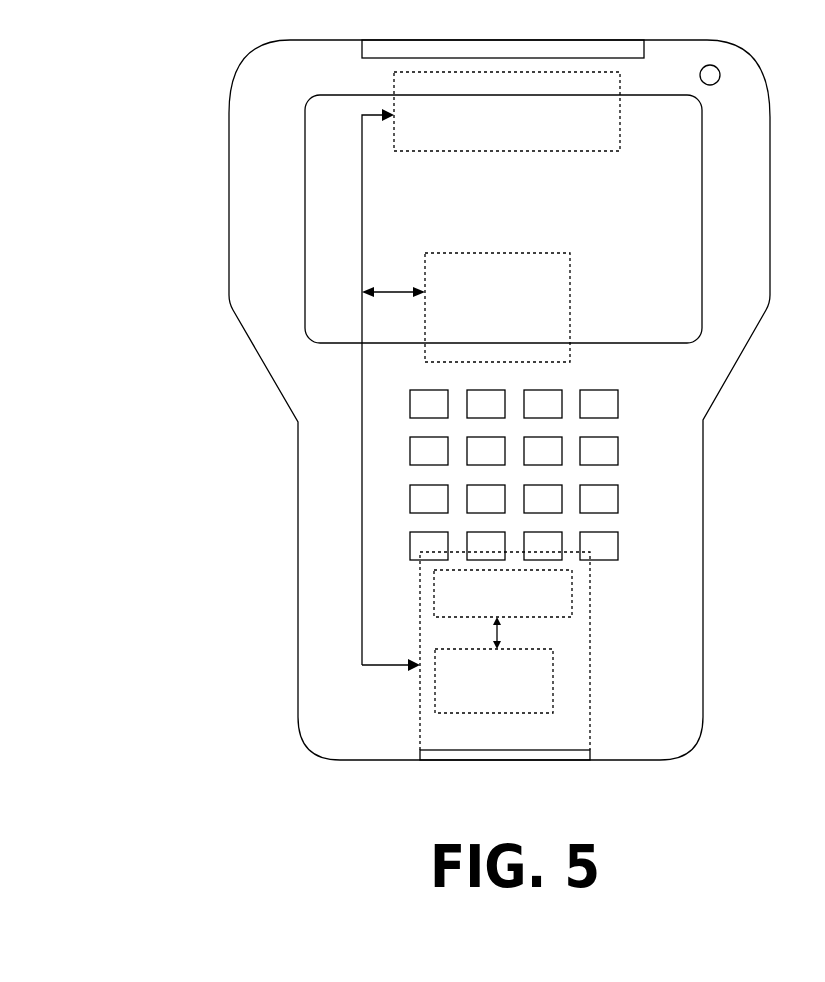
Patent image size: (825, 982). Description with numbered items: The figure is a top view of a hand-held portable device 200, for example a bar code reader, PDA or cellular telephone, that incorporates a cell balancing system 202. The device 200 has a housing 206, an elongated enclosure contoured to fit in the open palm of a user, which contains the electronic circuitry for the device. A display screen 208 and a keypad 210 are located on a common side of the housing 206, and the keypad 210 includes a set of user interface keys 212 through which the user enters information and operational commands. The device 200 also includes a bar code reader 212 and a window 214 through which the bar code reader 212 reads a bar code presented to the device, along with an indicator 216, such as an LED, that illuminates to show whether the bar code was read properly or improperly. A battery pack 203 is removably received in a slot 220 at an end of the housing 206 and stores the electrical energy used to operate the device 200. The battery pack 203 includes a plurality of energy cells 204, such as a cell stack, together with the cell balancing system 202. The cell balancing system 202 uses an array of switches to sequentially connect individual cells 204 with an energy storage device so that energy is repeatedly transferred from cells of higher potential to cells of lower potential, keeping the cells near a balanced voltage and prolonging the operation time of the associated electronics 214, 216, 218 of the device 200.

The hand-held portable device 200 is at (162, 198).
The cell balancing system 202 is at (573, 593).
The battery pack 203 is at (420, 700).
The energy cells 204 is at (553, 682).
The housing 206 is at (294, 497).
The display screen 208 is at (668, 342).
The keypad 210 is at (340, 603).
The user interface keys / bar code reader 212 is at (393, 90).
The window 214 is at (432, 40).
The indicator 216 is at (718, 68).
The associated electronics 218 is at (570, 295).
The slot 220 is at (458, 760).